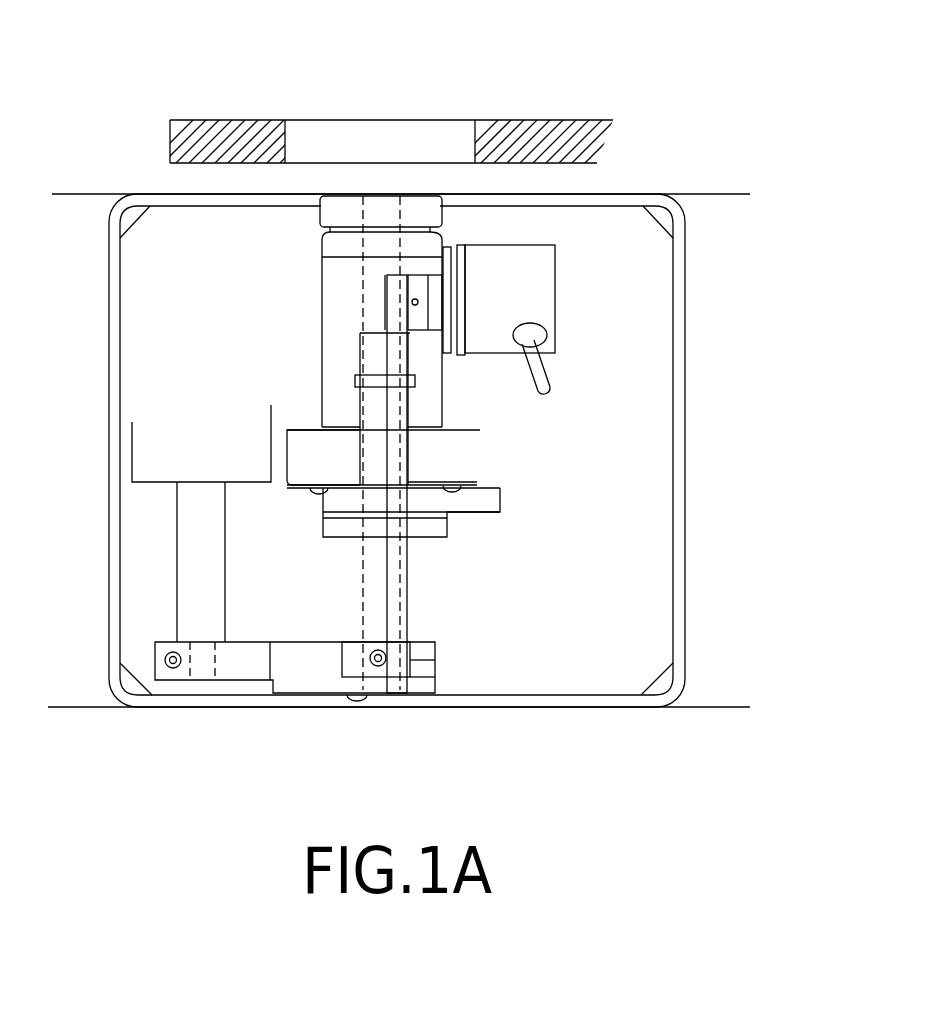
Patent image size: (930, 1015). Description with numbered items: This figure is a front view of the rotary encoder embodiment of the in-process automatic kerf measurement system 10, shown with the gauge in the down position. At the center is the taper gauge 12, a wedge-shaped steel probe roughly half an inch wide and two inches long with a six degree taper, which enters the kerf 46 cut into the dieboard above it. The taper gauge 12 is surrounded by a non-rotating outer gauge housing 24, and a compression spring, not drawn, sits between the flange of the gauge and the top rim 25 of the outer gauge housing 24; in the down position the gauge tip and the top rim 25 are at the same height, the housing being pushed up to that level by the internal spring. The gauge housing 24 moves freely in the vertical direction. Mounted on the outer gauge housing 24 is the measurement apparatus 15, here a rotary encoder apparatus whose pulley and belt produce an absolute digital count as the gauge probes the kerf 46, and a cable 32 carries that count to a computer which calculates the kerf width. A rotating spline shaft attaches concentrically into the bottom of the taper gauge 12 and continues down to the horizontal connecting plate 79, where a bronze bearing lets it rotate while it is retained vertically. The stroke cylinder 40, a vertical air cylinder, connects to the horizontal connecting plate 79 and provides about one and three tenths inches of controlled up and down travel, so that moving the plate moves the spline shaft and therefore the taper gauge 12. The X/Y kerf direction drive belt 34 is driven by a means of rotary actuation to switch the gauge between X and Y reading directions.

The in-process automatic kerf measurement system 10 is at (408, 102).
The taper gauge 12 is at (380, 238).
The measurement apparatus 15 is at (555, 275).
The outer gauge housing 24 is at (322, 357).
The top rim of the outer gauge housing 25 is at (418, 192).
The cable 32 is at (555, 388).
The X/Y kerf direction drive belt 34 is at (482, 513).
The stroke cylinder 40 is at (240, 453).
The kerf 46 is at (317, 140).
The horizontal connecting plate 79 is at (235, 682).